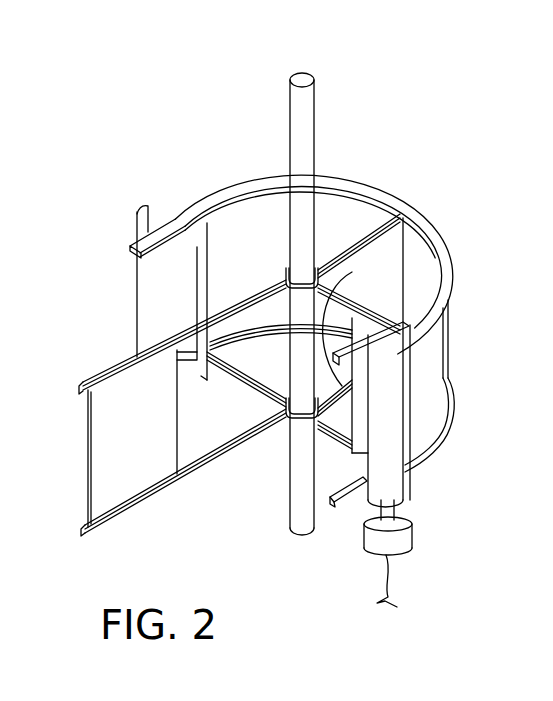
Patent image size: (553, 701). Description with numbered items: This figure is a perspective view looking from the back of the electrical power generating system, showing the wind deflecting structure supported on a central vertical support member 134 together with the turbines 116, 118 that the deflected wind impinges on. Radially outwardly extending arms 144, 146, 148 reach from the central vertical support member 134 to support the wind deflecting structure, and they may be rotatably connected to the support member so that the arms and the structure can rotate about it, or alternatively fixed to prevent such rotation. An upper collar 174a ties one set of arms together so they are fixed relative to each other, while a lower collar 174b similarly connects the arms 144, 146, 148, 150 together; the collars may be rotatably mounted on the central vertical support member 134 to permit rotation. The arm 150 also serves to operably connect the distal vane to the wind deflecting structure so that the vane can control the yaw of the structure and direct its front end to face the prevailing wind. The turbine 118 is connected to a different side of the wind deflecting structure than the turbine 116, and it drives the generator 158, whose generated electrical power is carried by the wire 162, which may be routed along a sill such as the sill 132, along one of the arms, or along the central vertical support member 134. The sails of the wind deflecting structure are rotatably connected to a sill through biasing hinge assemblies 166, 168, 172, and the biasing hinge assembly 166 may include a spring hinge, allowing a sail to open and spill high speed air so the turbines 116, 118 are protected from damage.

The turbine 116 is at (146, 294).
The turbine 118 is at (393, 481).
The sill 132 is at (357, 508).
The central vertical support member 134 is at (304, 112).
The radially extending arm 144 is at (265, 382).
The radially extending arm 146 is at (334, 297).
The radially extending arm 148 is at (345, 432).
The radially extending arm 150 is at (205, 458).
The electrical generator 158 is at (405, 530).
The wire 162 is at (392, 578).
The biasing hinge assembly 166 is at (398, 208).
The biasing hinge assembly 168 is at (415, 216).
The biasing hinge assembly 172 is at (446, 271).
The collar 174a is at (291, 272).
The collar 174b is at (286, 403).